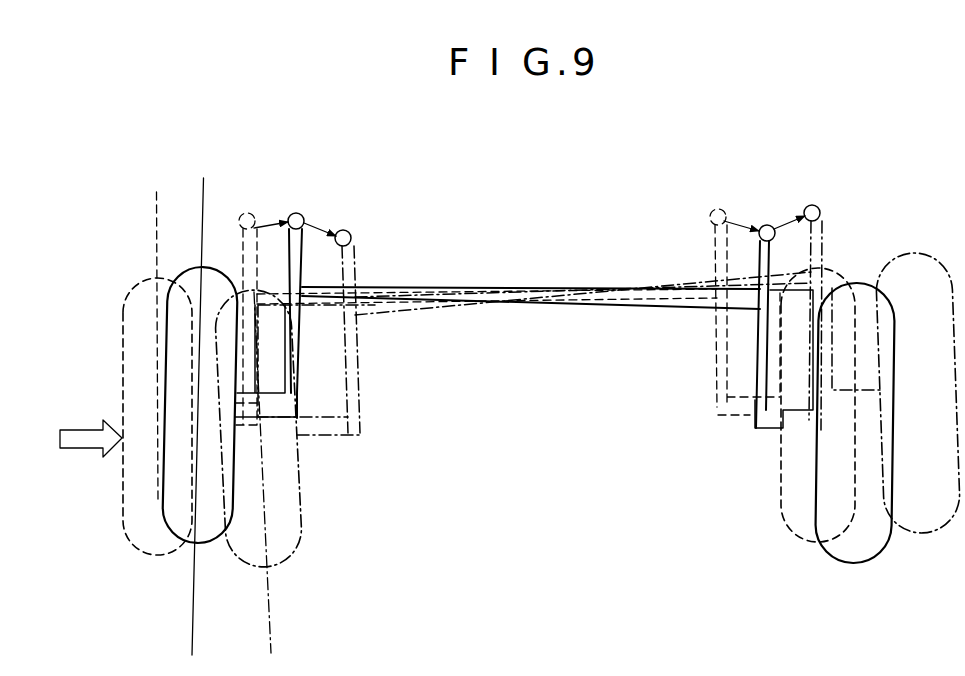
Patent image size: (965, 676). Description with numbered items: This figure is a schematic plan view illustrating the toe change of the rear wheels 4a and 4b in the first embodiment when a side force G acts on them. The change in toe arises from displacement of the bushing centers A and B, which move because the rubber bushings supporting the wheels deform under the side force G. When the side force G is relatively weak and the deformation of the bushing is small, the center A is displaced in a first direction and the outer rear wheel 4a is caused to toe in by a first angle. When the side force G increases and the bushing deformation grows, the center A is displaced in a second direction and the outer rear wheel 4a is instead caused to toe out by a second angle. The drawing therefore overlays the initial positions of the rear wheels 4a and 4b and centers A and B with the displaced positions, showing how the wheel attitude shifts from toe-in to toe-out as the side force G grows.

The outer rear wheel 4a is at (160, 556).
The rear wheel 4b is at (800, 543).
The center of the rubber bushing A is at (245, 212).
The center of the rubber bushing B is at (710, 214).
The side force G is at (78, 430).